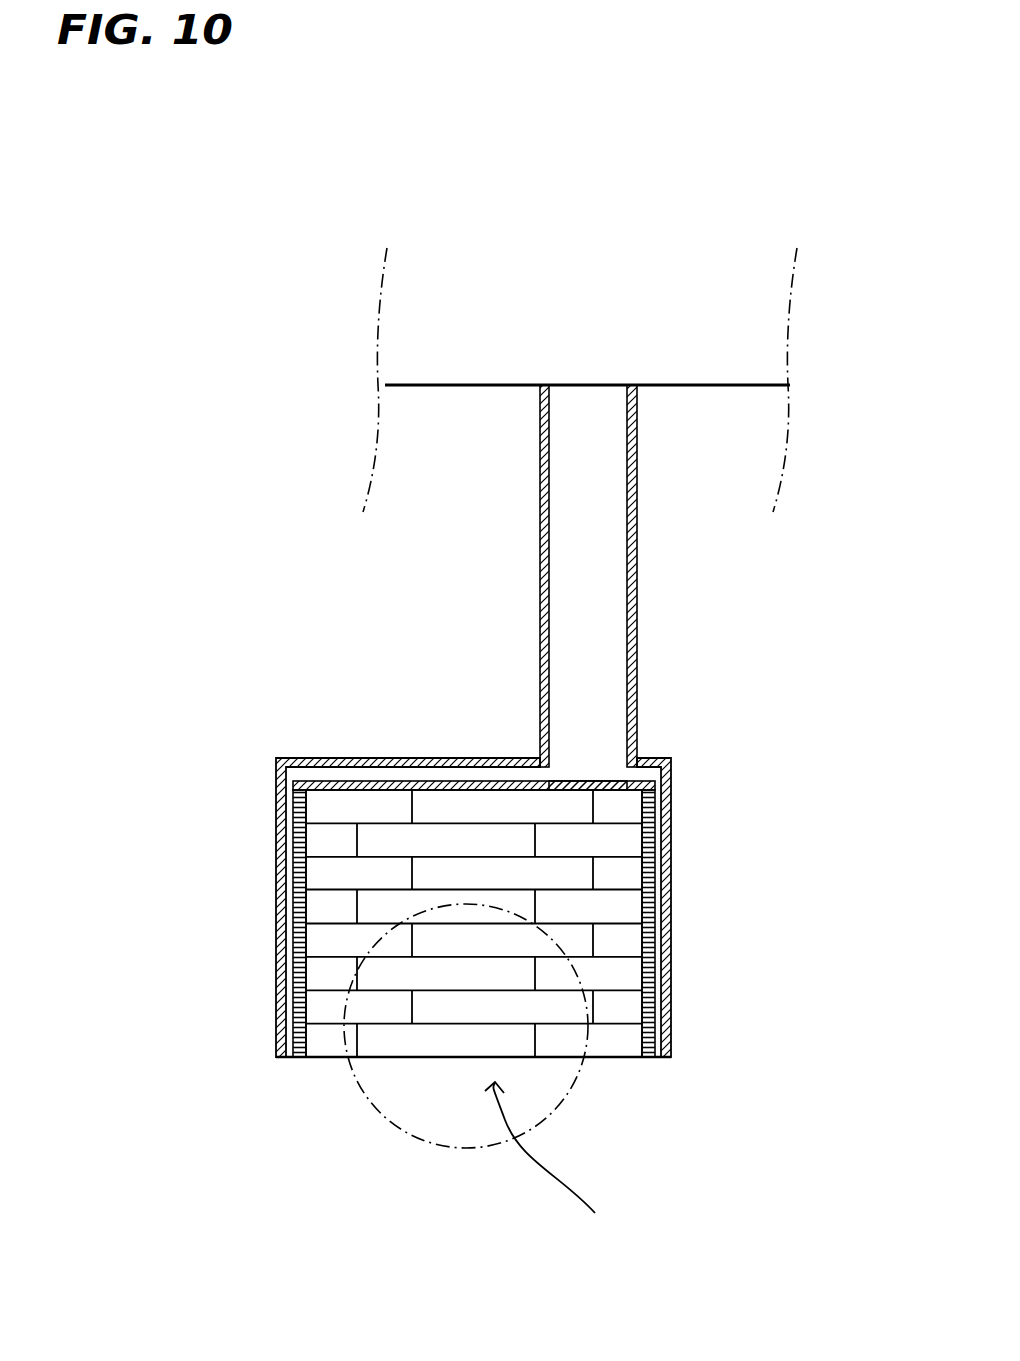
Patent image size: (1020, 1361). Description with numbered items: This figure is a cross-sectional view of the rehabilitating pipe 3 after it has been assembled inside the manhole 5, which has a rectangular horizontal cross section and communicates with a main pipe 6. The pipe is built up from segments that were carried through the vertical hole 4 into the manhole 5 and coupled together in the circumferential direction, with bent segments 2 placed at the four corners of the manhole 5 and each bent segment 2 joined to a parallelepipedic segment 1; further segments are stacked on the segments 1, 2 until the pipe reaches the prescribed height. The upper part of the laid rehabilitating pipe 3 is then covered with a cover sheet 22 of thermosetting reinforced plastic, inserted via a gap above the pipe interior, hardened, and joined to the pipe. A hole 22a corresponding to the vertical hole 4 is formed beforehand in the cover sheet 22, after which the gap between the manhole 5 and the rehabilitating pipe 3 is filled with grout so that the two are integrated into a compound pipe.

The parallelepipedic segment 1 is at (375, 1043).
The bent segment 2 is at (560, 1037).
The rehabilitating pipe 3 is at (555, 1164).
The vertical hole 4 is at (588, 385).
The manhole 5 is at (672, 880).
The main pipe 6 is at (380, 1114).
The cover sheet 22 is at (353, 783).
The hole 22a is at (592, 785).